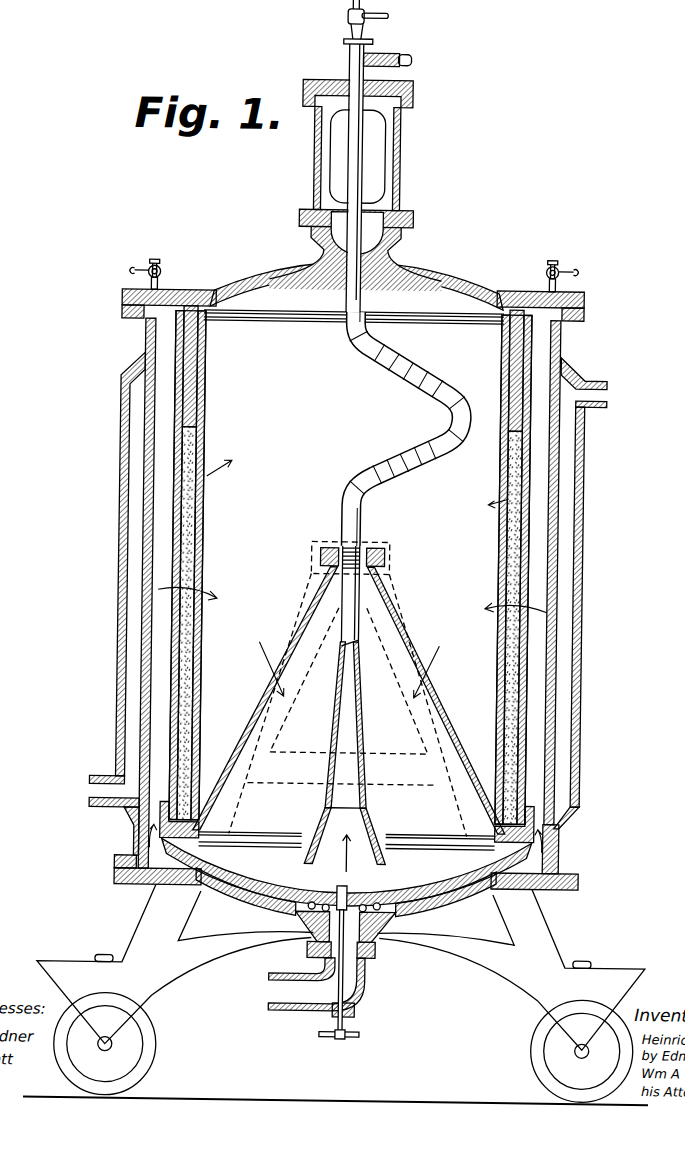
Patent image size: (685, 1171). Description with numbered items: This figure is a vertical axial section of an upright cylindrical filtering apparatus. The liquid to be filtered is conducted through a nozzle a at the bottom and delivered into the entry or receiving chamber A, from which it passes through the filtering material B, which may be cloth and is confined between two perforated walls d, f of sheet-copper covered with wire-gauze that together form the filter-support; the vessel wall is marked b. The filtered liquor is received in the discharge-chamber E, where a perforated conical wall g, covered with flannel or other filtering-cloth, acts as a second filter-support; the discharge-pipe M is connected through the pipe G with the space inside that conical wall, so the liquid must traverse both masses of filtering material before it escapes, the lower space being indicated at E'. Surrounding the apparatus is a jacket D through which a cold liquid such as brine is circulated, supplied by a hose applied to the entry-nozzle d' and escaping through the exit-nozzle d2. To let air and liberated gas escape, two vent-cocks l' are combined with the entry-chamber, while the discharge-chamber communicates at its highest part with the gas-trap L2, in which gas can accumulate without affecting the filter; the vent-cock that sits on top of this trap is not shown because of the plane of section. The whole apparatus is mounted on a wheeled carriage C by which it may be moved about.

The discharge-pipe M is at (420, 61).
The gas-trap L2 is at (393, 178).
The vent-cock l' is at (354, 274).
The exit-nozzle d2 is at (634, 395).
The discharge-chamber E is at (353, 349).
The perforated wall d is at (340, 567).
The filtering material B is at (202, 576).
The perforated wall f is at (216, 541).
The vessel wall b is at (157, 698).
The entry-chamber A is at (345, 795).
The jacket D is at (118, 700).
The entry-nozzle d' is at (95, 784).
The perforated conical wall g is at (418, 706).
The pipe G is at (347, 708).
The lower chamber E' is at (350, 688).
The carriage C is at (337, 994).
The nozzle a is at (262, 994).